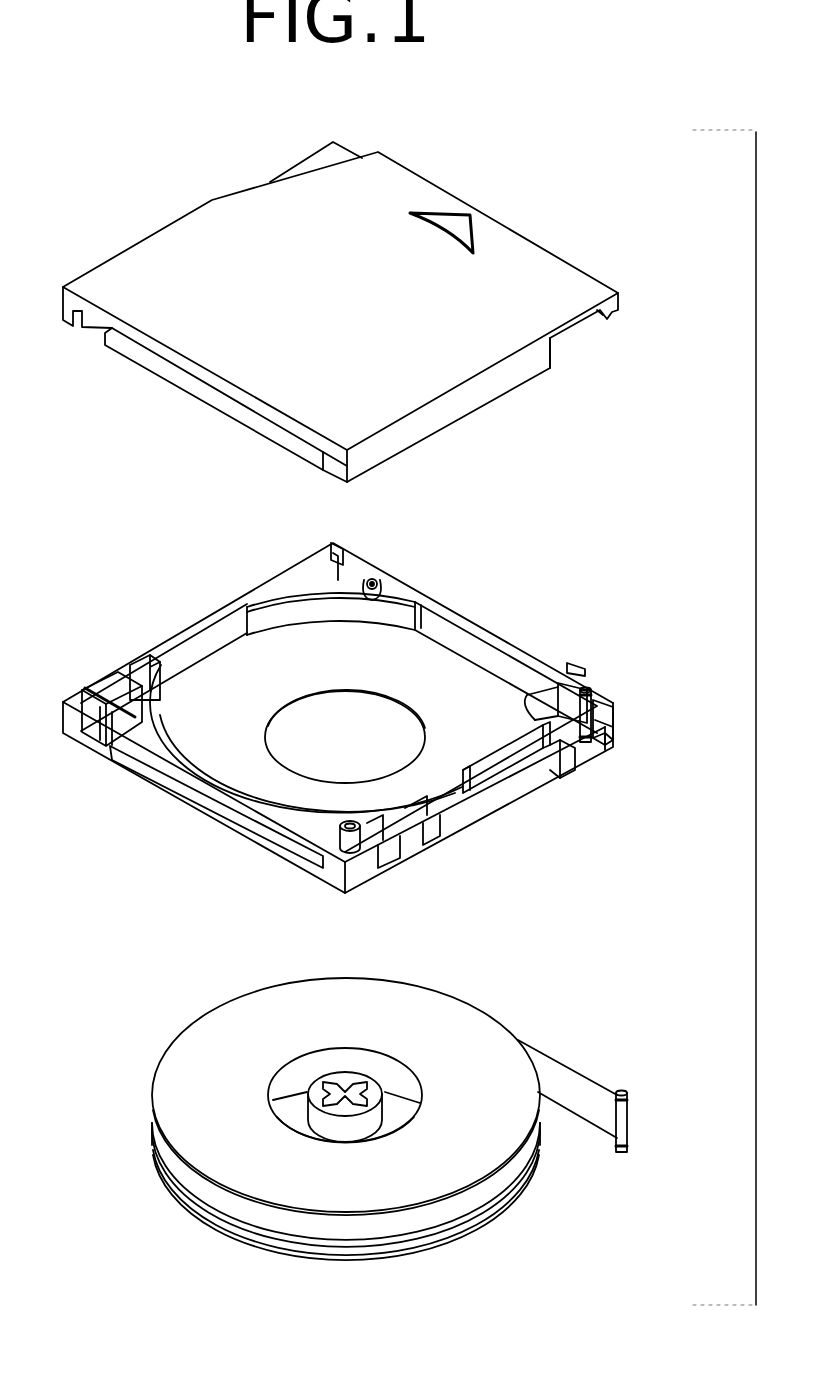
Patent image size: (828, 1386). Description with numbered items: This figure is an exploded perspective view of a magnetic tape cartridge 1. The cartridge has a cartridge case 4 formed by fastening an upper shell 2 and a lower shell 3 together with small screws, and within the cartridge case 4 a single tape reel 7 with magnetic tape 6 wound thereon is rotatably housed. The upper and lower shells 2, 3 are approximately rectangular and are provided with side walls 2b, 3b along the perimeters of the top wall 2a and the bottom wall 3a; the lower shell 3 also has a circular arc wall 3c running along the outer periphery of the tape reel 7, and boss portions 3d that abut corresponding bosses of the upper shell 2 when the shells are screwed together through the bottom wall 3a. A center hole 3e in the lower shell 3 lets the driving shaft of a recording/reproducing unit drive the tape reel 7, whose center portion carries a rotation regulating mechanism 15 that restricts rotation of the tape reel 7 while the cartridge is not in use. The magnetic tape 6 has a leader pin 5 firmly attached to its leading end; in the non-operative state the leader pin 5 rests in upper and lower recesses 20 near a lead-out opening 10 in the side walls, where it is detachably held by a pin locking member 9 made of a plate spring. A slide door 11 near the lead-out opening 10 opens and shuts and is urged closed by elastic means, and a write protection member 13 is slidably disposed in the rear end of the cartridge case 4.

The magnetic tape cartridge 1 is at (86, 165).
The upper shell 2 is at (402, 460).
The top wall 2a is at (527, 260).
The side walls 2b is at (213, 400).
The lower shell 3 is at (415, 578).
The bottom wall 3a is at (210, 668).
The side walls 3b is at (190, 783).
The circular arc wall 3c is at (300, 608).
The boss portions 3d is at (130, 703).
The center hole 3e is at (270, 735).
The cartridge case 4 is at (473, 495).
The leader pin 5 is at (617, 715).
The magnetic tape 6 is at (567, 707).
The tape reel 7 is at (208, 1023).
The pin locking member 9 is at (584, 681).
The lead-out opening 10 is at (550, 345).
The slide door 11 is at (487, 752).
The write protection member 13 is at (93, 730).
The rotation regulating mechanism 15 is at (352, 1075).
The recesses 20 is at (600, 743).